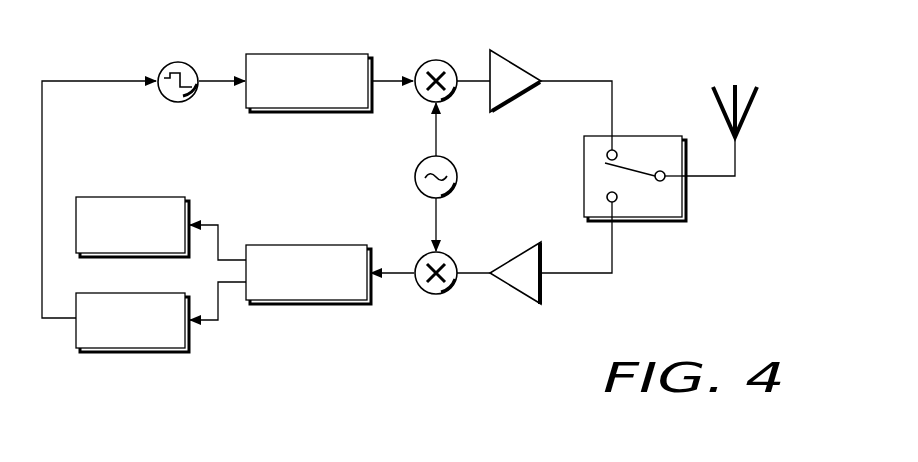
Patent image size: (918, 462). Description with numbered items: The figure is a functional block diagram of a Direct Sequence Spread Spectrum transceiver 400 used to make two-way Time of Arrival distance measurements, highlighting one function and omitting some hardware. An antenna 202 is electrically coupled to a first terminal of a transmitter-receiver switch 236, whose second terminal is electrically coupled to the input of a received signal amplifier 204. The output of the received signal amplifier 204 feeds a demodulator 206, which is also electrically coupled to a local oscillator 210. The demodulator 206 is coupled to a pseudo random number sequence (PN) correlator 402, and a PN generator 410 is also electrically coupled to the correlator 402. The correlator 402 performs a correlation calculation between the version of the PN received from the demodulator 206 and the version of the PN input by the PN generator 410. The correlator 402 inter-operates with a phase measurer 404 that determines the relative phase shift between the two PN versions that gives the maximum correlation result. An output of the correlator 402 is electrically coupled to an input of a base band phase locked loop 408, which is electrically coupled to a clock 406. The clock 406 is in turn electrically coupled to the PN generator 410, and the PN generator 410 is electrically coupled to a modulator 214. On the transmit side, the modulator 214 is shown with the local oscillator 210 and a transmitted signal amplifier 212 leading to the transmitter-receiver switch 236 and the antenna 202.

The Direct Sequence Spread Spectrum transceiver 400 is at (709, 320).
The antenna 202 is at (752, 93).
The received signal amplifier 204 is at (517, 295).
The demodulator 206 is at (440, 295).
The local oscillator 210 is at (458, 177).
The transmitted signal amplifier 212 is at (520, 100).
The modulator 214 is at (436, 58).
The transmitter-receiver switch 236 is at (650, 222).
The PN correlator 402 is at (310, 245).
The phase measurer 404 is at (160, 197).
The clock 406 is at (188, 102).
The base band phase locked loop 408 is at (105, 351).
The PN generator 410 is at (262, 54).